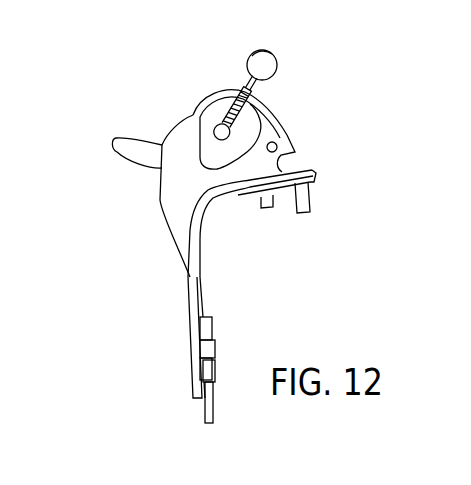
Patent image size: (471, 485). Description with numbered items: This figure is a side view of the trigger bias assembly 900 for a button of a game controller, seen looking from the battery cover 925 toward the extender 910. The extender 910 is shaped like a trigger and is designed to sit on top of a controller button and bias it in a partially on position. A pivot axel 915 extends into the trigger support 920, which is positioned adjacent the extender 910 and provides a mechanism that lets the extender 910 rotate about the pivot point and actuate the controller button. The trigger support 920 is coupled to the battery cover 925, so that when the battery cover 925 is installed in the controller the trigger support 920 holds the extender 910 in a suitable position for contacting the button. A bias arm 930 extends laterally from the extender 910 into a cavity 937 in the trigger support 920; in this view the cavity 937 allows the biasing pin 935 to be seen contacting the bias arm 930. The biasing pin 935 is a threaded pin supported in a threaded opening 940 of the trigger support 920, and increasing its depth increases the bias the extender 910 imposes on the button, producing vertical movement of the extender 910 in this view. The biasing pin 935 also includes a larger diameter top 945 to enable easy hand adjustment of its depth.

The trigger bias assembly 900 is at (362, 127).
The extender 910 is at (114, 146).
The pivot axel 915 is at (278, 144).
The trigger support 920 is at (162, 205).
The battery cover 925 is at (187, 317).
The bias arm 930 is at (203, 117).
The biasing pin 935 is at (279, 65).
The cavity 937 is at (215, 152).
The threaded opening 940 is at (243, 92).
The larger diameter top 945 is at (267, 51).